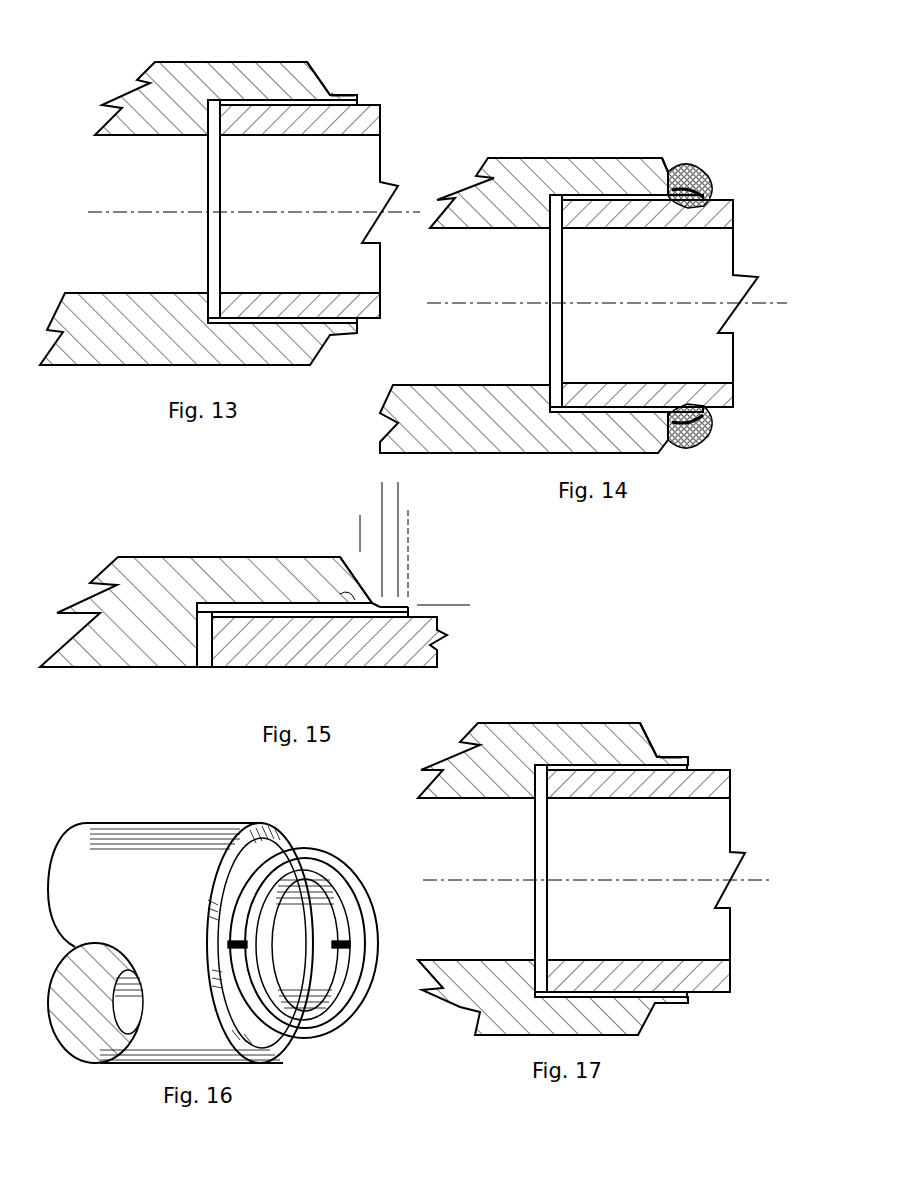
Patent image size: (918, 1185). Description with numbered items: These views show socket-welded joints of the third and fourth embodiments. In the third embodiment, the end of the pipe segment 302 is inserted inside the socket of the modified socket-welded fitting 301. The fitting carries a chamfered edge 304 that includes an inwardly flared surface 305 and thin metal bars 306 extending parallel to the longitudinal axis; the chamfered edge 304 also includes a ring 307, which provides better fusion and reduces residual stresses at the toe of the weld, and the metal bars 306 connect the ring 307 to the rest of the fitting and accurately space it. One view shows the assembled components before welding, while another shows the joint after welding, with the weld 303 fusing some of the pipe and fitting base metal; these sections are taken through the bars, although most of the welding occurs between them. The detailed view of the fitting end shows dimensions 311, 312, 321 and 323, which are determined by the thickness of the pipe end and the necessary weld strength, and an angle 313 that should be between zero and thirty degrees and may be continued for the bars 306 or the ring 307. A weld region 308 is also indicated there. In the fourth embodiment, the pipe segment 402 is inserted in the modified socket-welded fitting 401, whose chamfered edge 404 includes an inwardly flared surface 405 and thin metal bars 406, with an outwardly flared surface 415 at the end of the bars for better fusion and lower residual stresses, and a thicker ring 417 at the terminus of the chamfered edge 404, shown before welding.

In FIG. 13, the modified socket-welded fitting 301 is at (166, 70).
In FIG. 14, the modified socket-welded fitting 301 is at (508, 160).
In FIG. 15, the modified socket-welded fitting 301 is at (193, 555).
In FIG. 13, the pipe segment 302 is at (372, 120).
In FIG. 14, the pipe segment 302 is at (722, 222).
In FIG. 15, the pipe segment 302 is at (437, 618).
In FIG. 14, the weld 303 is at (695, 170).
In FIG. 13, the chamfered edge 304 is at (316, 58).
In FIG. 14, the chamfered edge 304 is at (666, 158).
In FIG. 15, the chamfered edge 304 is at (350, 562).
In FIG. 13, the inwardly flared surface 305 is at (334, 84).
In FIG. 15, the inwardly flared surface 305 is at (373, 592).
In FIG. 13, the thin metal bars 306 is at (344, 93).
In FIG. 15, the thin metal bars 306 is at (385, 617).
In FIG. 13, the ring 307 is at (353, 95).
In FIG. 15, the ring 307 is at (407, 617).
In FIG. 15, the weld 308 is at (343, 585).
In FIG. 15, the dimension 311 is at (356, 521).
In FIG. 15, the dimension 312 is at (427, 602).
In FIG. 15, the angle 313 is at (322, 605).
In FIG. 15, the dimension 321 is at (400, 493).
In FIG. 15, the dimension 323 is at (410, 521).
In FIG. 16, the modified socket-welded fitting 401 is at (165, 943).
In FIG. 17, the modified socket-welded fitting 401 is at (510, 728).
In FIG. 17, the pipe segment 402 is at (720, 785).
In FIG. 16, the chamfered edge 404 is at (282, 797).
In FIG. 17, the chamfered edge 404 is at (649, 730).
In FIG. 17, the inwardly flared surface 405 is at (658, 752).
In FIG. 16, the thin metal bars 406 is at (332, 945).
In FIG. 17, the thin metal bars 406 is at (670, 752).
In FIG. 17, the outwardly flared surface 415 is at (678, 750).
In FIG. 16, the thicker ring 417 is at (362, 878).
In FIG. 17, the thicker ring 417 is at (684, 760).